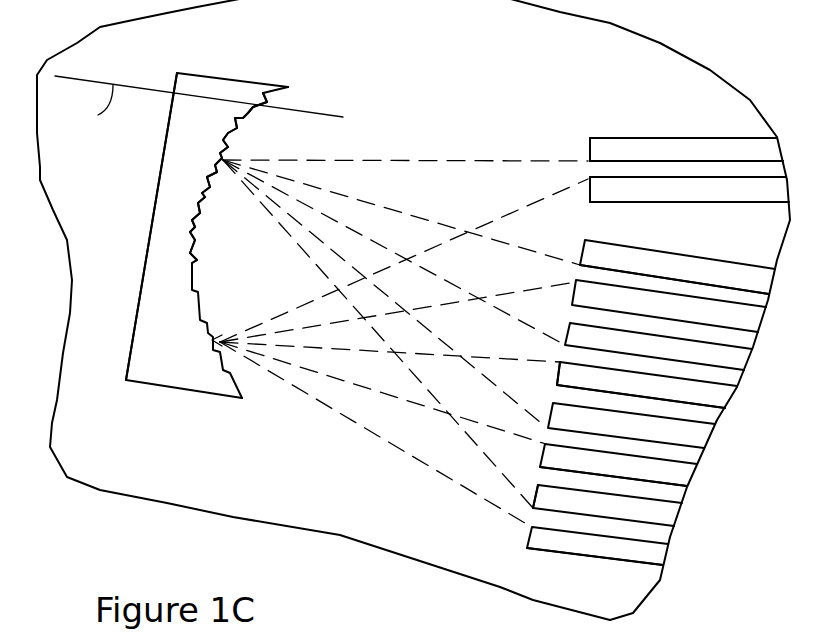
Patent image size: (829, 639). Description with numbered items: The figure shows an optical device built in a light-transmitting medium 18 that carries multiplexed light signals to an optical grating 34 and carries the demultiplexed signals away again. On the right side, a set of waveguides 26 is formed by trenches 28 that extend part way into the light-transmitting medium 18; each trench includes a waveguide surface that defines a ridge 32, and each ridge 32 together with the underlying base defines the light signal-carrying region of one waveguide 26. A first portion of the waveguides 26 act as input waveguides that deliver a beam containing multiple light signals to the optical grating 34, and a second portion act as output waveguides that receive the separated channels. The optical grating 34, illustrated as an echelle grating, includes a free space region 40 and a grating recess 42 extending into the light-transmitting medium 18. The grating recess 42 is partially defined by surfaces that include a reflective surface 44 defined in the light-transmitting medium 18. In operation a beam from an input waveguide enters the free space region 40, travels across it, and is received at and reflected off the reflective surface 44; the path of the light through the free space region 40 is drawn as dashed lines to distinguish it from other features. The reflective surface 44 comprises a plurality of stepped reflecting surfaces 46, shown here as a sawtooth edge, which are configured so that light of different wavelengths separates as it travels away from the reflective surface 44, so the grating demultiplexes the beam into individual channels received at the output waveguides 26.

The light-transmitting medium 18 is at (293, 513).
The waveguides 26 is at (674, 141).
The trenches 28 is at (623, 150).
The ridge 32 is at (677, 170).
The optical grating 34 is at (313, 65).
The free space region 40 is at (292, 287).
The grating recess 42 is at (152, 219).
The reflective surface 44 is at (208, 225).
The stepped reflecting surfaces 46 is at (237, 128).